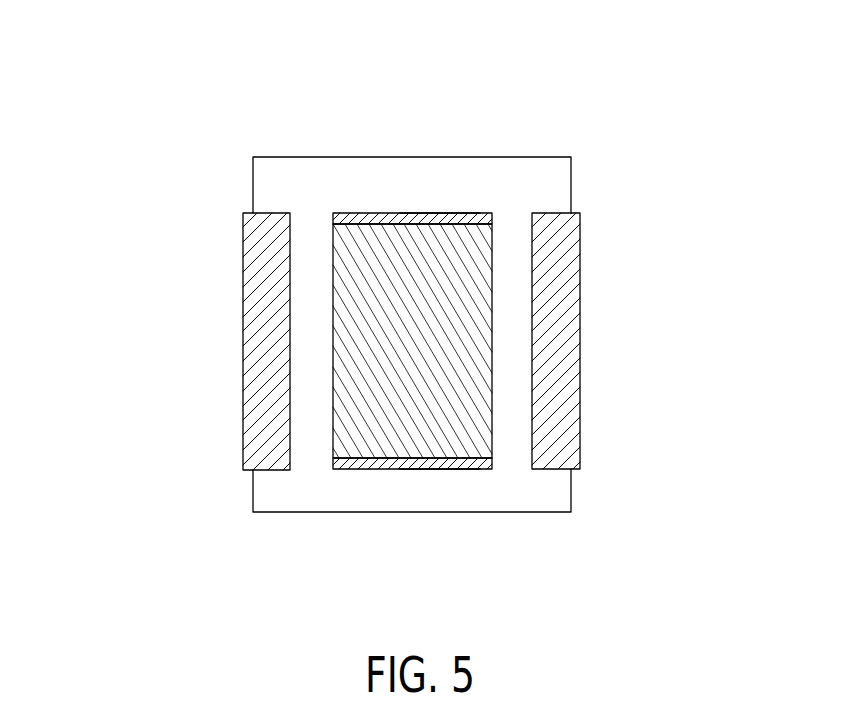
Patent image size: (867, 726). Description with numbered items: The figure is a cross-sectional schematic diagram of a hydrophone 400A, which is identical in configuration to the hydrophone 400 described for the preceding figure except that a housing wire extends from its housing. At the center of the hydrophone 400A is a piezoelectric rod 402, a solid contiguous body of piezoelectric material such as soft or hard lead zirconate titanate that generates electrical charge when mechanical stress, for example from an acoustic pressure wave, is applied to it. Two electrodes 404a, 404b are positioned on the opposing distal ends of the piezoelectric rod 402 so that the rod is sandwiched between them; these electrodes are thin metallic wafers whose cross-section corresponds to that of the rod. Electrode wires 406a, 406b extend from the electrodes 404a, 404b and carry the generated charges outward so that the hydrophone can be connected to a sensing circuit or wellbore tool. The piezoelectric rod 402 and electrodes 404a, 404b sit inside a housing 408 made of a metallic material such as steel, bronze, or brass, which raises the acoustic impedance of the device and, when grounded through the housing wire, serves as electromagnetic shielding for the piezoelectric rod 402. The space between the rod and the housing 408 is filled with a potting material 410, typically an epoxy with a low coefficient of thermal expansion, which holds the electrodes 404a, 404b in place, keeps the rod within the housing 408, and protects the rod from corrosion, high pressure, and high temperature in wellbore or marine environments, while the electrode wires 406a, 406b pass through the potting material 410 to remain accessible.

The hydrophone 400A is at (140, 92).
The hydrophone 400 is at (740, 218).
The piezoelectric rod 402 is at (478, 437).
The electrode 404a is at (393, 213).
The electrode 404b is at (368, 459).
The electrode wire 406a is at (438, 213).
The electrode wire 406b is at (438, 468).
The housing 408 is at (243, 310).
The potting material 410 is at (258, 175).